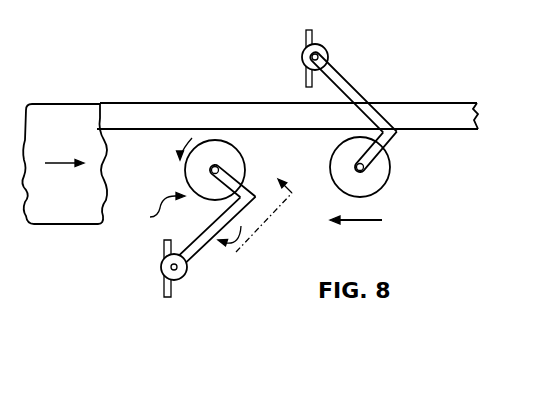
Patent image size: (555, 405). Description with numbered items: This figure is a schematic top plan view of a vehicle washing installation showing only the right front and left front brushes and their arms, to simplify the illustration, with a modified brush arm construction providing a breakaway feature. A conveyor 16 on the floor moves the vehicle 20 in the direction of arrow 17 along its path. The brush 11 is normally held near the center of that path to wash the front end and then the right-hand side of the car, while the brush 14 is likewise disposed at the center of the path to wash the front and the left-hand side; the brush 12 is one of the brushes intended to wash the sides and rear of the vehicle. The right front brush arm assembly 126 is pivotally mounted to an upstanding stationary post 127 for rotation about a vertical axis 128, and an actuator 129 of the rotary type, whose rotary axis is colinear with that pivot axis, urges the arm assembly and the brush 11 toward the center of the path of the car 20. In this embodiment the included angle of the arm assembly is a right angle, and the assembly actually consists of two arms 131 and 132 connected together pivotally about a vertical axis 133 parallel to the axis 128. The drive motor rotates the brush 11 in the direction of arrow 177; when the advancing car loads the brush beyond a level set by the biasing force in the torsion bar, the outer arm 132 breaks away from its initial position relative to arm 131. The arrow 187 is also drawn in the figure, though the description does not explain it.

The brush 11 is at (238, 161).
The brush 12 is at (249, 228).
The brush 14 is at (388, 162).
The conveyor 16 is at (188, 112).
The arrow 17 is at (62, 163).
The vehicle 20 is at (44, 236).
The right front brush arm assembly 126 is at (356, 211).
The upstanding stationary post 127 is at (165, 295).
The vertical axis 128 is at (181, 280).
The actuator 129 is at (161, 256).
The arm 131 is at (241, 250).
The outer arm 132 is at (246, 172).
The vertical axis 133 is at (263, 220).
The arrow 177 is at (186, 140).
The movement arrow 187 is at (154, 209).